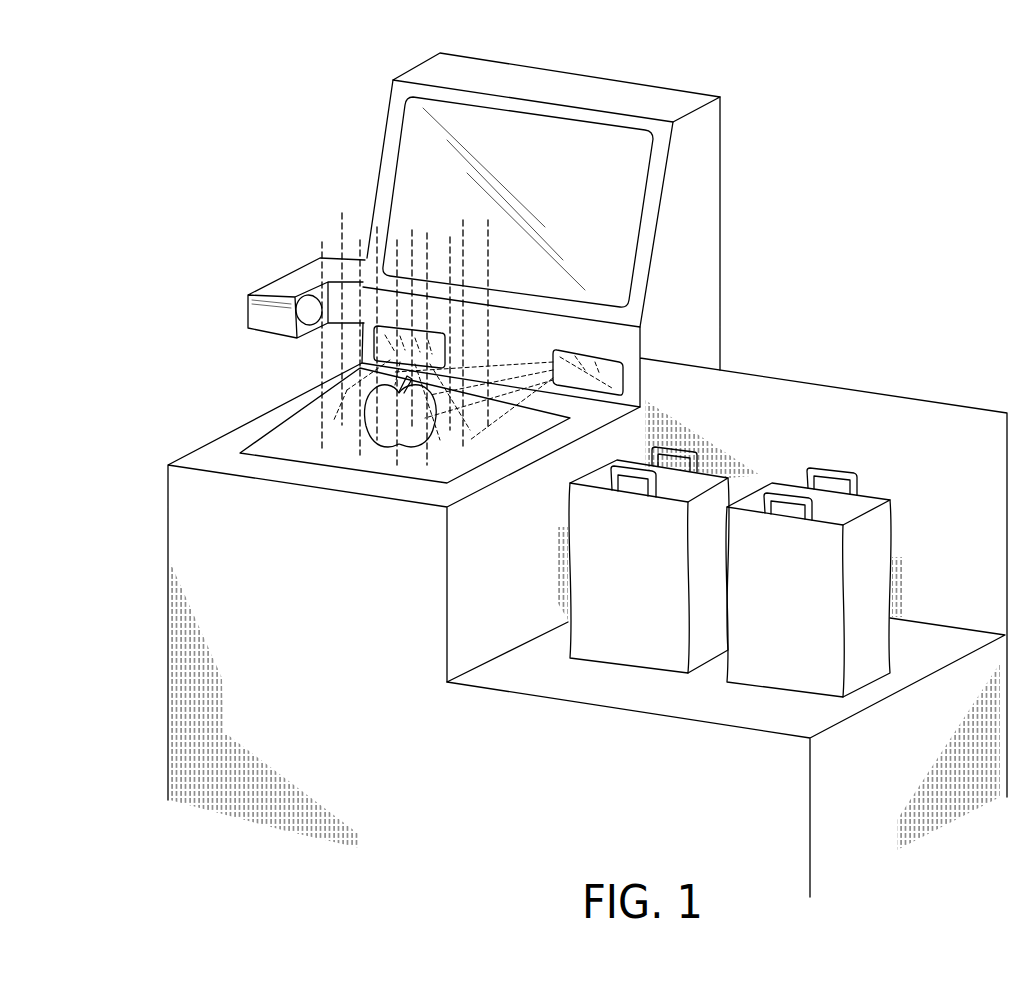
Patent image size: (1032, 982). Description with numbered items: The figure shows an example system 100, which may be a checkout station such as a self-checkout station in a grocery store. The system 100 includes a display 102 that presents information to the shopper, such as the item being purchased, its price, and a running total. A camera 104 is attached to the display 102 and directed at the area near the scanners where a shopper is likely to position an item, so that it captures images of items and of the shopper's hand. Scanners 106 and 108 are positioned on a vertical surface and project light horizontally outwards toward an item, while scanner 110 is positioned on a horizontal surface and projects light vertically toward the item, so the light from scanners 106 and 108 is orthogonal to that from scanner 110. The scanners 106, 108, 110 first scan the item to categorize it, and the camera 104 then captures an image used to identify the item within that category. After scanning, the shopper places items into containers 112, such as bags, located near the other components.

The system 100 is at (687, 43).
The display 102 is at (625, 192).
The camera 104 is at (270, 283).
The scanner 106 is at (435, 350).
The scanner 108 is at (600, 373).
The scanner 110 is at (315, 440).
The containers 112 is at (705, 483).